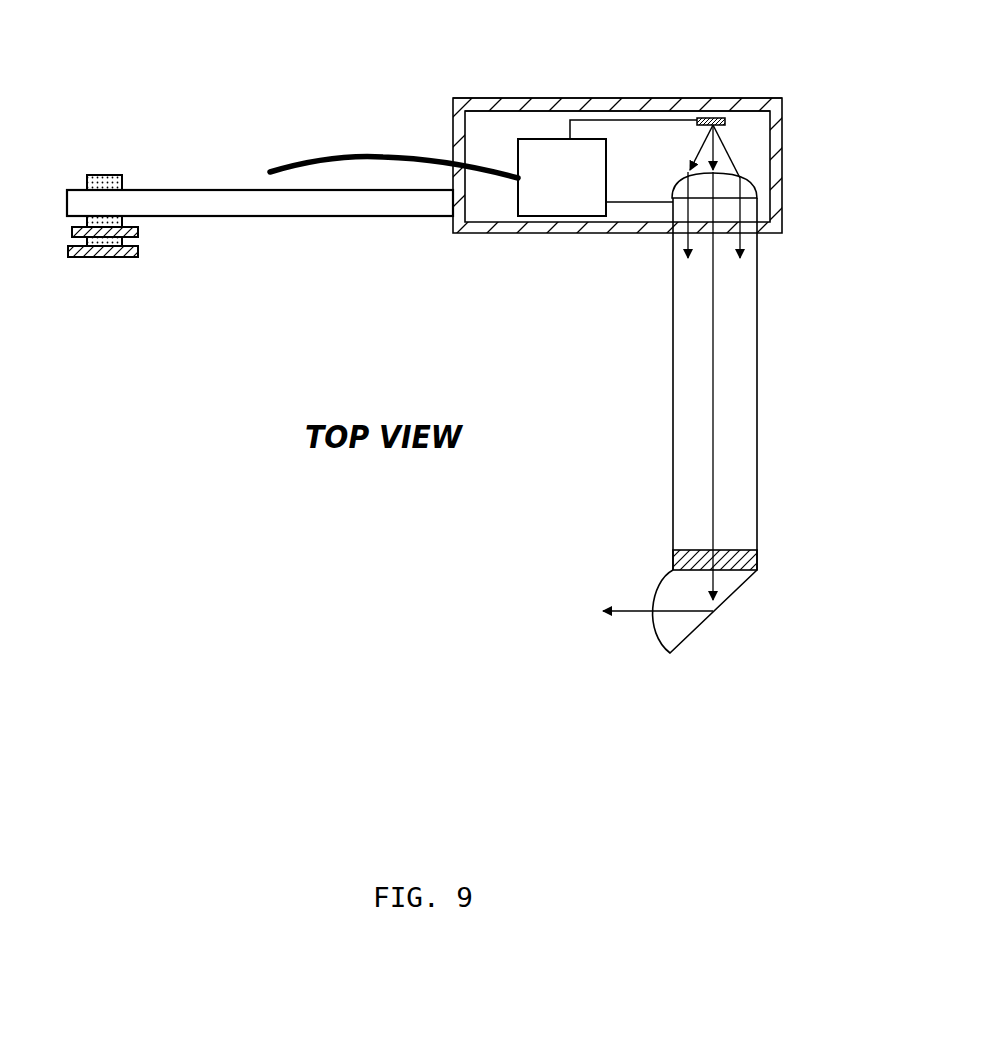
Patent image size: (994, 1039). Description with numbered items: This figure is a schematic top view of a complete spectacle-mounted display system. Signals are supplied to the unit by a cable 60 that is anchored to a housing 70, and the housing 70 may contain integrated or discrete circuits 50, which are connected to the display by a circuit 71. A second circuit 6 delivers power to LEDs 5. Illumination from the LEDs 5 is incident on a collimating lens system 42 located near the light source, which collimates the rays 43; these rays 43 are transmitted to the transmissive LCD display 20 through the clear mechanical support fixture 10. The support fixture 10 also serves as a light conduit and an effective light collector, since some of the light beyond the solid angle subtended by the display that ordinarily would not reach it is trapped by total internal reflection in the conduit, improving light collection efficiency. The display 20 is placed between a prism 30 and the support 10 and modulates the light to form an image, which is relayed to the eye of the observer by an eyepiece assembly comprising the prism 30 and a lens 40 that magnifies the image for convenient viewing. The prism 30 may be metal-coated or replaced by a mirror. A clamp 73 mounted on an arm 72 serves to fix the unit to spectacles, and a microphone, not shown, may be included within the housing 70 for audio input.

The LEDs 5 is at (718, 112).
The second circuit 6 is at (632, 115).
The clear mechanical support fixture 10 is at (763, 355).
The transmissive LCD 20 is at (750, 562).
The prism 30 is at (728, 602).
The lens 40 is at (652, 625).
The collimating lens system 42 is at (757, 186).
The rays 43 is at (713, 451).
The integrated or discrete circuits 50 is at (543, 165).
The cable 60 is at (357, 153).
The housing 70 is at (783, 155).
The circuit 71 is at (638, 206).
The arm 72 is at (435, 217).
The clamp 73 is at (100, 258).